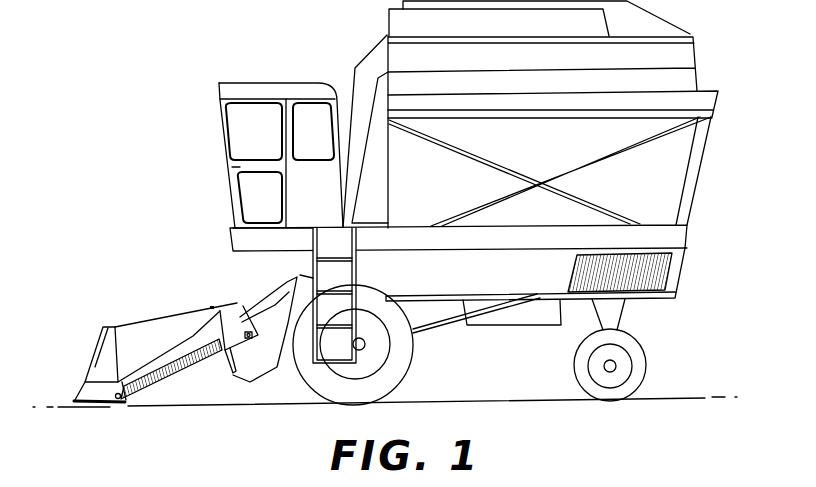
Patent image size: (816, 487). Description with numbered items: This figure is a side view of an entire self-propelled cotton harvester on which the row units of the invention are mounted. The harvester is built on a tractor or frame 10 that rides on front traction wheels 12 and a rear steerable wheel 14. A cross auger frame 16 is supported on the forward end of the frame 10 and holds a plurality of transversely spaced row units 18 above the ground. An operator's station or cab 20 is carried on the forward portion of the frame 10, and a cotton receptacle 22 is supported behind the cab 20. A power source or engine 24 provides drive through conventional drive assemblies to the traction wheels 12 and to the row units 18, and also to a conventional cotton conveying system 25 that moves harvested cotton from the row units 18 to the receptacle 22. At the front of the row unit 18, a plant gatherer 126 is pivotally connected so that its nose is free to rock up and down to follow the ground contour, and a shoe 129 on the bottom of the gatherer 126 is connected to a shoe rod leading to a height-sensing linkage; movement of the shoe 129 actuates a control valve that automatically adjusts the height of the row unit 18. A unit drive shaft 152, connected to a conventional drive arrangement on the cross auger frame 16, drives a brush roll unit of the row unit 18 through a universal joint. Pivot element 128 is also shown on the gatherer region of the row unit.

The frame 10 is at (683, 235).
The front traction wheels 12 is at (408, 360).
The rear steerable wheel 14 is at (578, 360).
The cross auger frame 16 is at (275, 383).
The row units 18 is at (139, 301).
The cab 20 is at (222, 137).
The cotton receptacle 22 is at (697, 55).
The engine 24 is at (575, 274).
The cotton conveying system 25 is at (341, 38).
The plant gatherer 126 is at (87, 392).
The pivot pin 128 is at (117, 404).
The shoe 129 is at (107, 404).
The unit drive shaft 152 is at (256, 311).